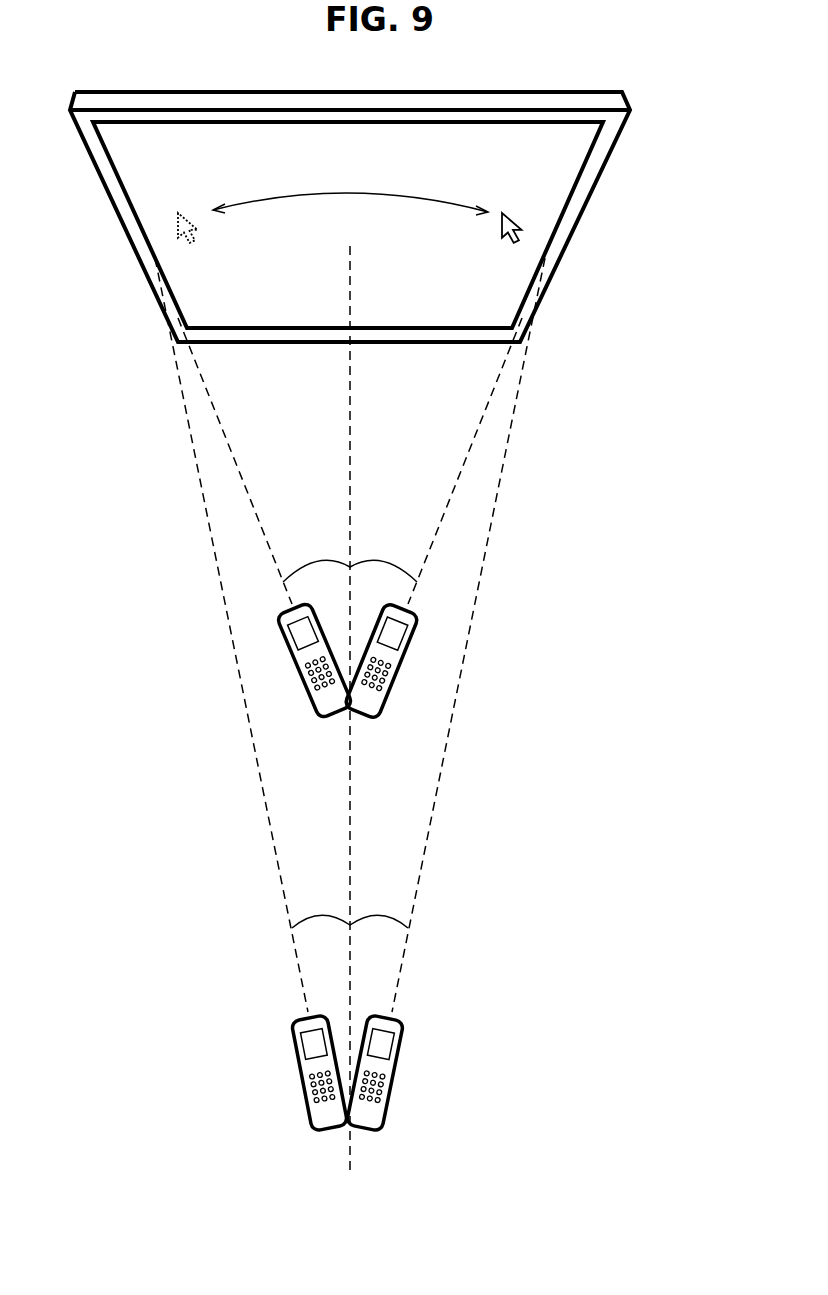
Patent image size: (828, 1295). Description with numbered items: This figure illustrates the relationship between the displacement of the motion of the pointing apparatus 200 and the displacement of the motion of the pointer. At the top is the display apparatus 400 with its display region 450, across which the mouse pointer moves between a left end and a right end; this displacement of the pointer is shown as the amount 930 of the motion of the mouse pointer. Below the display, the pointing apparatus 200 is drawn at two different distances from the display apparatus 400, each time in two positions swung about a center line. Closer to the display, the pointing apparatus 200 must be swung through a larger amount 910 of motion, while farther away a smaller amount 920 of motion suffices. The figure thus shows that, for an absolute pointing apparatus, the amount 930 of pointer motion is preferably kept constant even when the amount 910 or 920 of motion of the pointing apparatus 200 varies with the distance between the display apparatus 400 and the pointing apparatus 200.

The display apparatus 400 is at (592, 202).
The display region 450 is at (348, 143).
The amount of the motion of the mouse pointer 930 is at (444, 200).
The amount of the motion of the pointing apparatus 910 is at (383, 530).
The amount of the motion of the pointing apparatus 920 is at (395, 880).
The pointing apparatus 200 is at (397, 675).